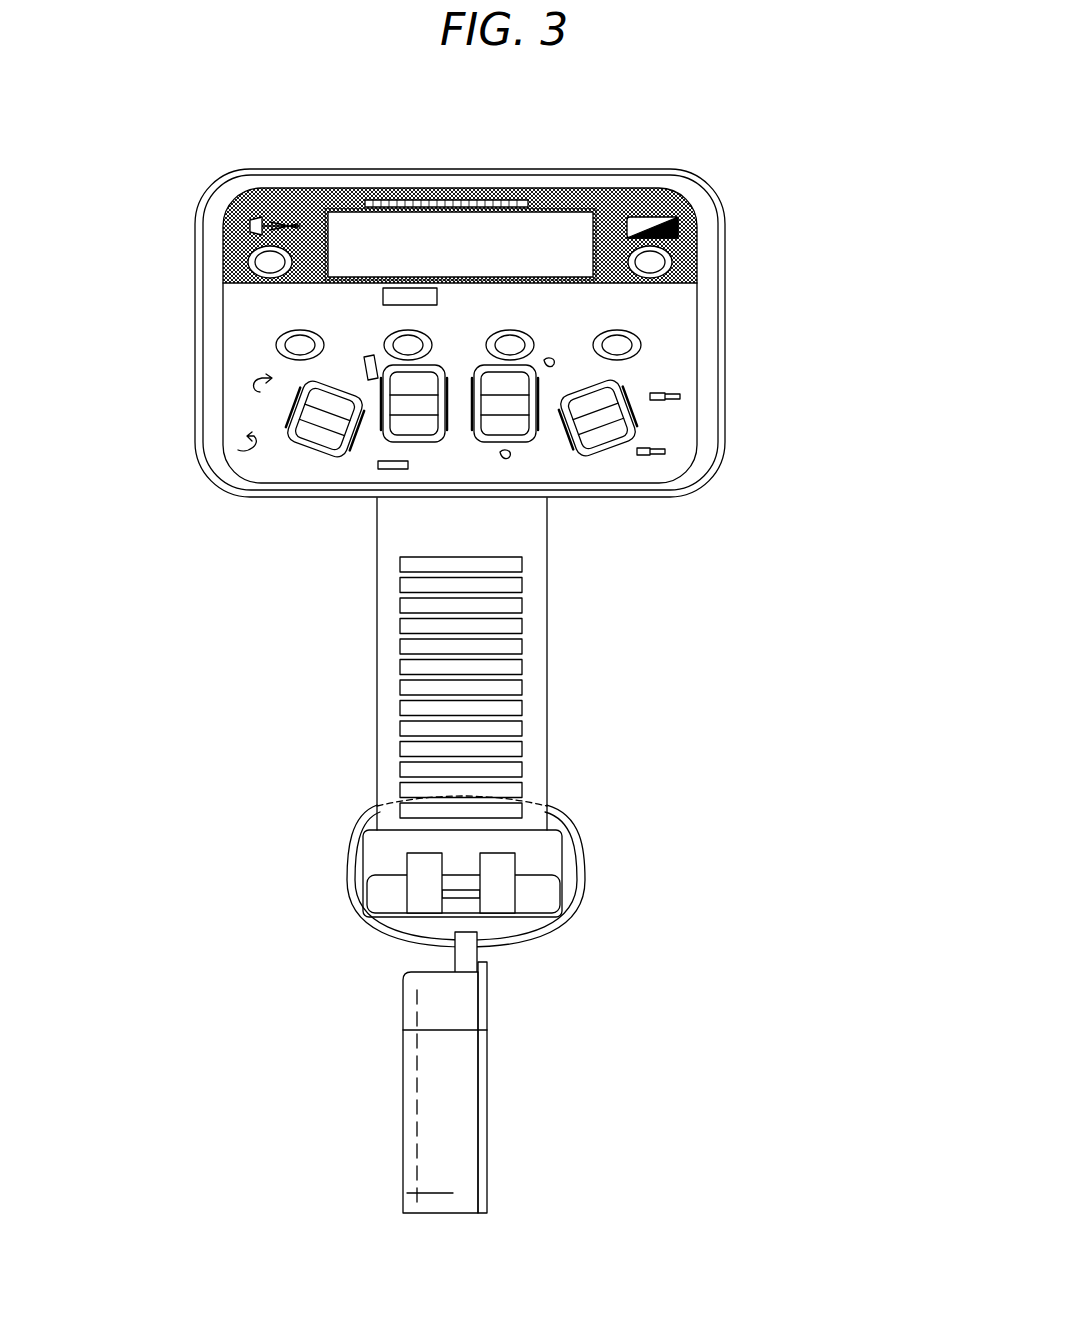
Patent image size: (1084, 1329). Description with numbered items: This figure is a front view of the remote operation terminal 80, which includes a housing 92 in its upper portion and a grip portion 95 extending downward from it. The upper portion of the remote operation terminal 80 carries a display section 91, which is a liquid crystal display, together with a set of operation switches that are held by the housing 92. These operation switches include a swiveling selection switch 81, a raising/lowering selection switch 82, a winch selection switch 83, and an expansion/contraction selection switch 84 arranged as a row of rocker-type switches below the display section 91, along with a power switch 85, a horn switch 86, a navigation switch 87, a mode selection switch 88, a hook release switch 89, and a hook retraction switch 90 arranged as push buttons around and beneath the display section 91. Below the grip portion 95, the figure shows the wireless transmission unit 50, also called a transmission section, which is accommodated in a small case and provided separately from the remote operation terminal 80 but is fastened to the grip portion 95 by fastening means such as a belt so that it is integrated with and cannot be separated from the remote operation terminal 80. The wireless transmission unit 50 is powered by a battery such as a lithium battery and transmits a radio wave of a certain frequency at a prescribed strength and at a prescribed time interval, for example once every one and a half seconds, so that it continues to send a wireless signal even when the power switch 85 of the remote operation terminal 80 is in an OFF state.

The wireless transmission unit 50 is at (467, 1073).
The remote operation terminal 80 is at (500, 520).
The swiveling selection switch 81 is at (323, 422).
The raising/lowering selection switch 82 is at (433, 420).
The winch selection switch 83 is at (491, 420).
The expansion/contraction selection switch 84 is at (618, 410).
The power switch 85 is at (648, 265).
The horn switch 86 is at (272, 266).
The navigation switch 87 is at (408, 345).
The mode selection switch 88 is at (510, 345).
The hook release switch 89 is at (300, 345).
The hook retraction switch 90 is at (617, 345).
The display section 91 is at (435, 235).
The housing 92 is at (632, 182).
The grip portion 95 is at (540, 678).